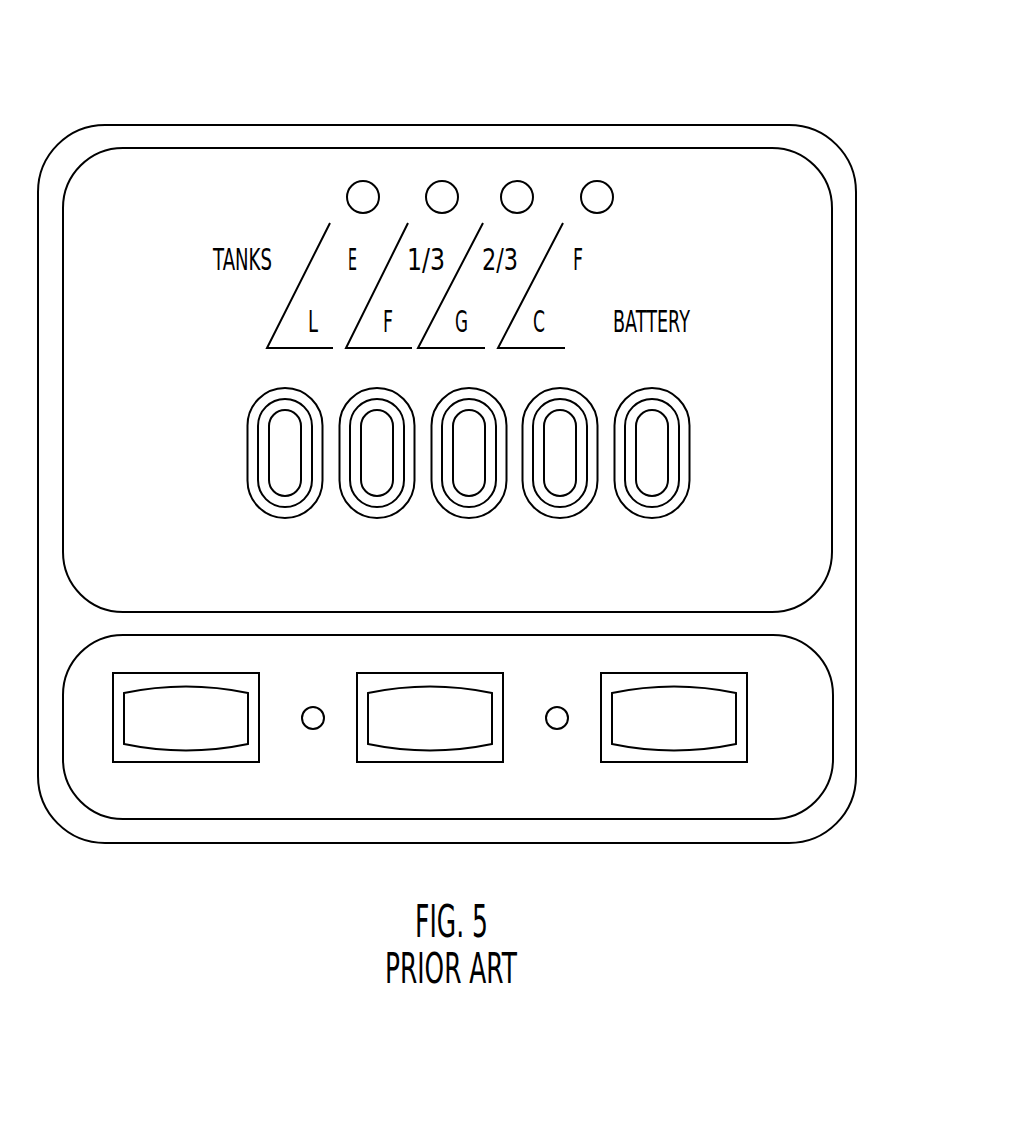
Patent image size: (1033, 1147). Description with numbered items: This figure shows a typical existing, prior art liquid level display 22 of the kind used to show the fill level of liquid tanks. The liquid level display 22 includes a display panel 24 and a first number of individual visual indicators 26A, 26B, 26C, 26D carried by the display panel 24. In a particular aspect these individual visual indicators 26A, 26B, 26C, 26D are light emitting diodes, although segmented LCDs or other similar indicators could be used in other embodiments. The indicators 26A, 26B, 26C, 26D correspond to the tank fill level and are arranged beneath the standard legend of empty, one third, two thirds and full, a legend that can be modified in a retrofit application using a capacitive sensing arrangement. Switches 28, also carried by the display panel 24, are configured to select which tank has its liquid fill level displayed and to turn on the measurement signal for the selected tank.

The liquid level display 22 is at (600, 42).
The display panel 24 is at (857, 267).
The individual visual indicator 26A is at (597, 181).
The individual visual indicator 26B is at (517, 181).
The individual visual indicator 26C is at (443, 181).
The individual visual indicator 26D is at (363, 181).
The switches 28 is at (222, 450).